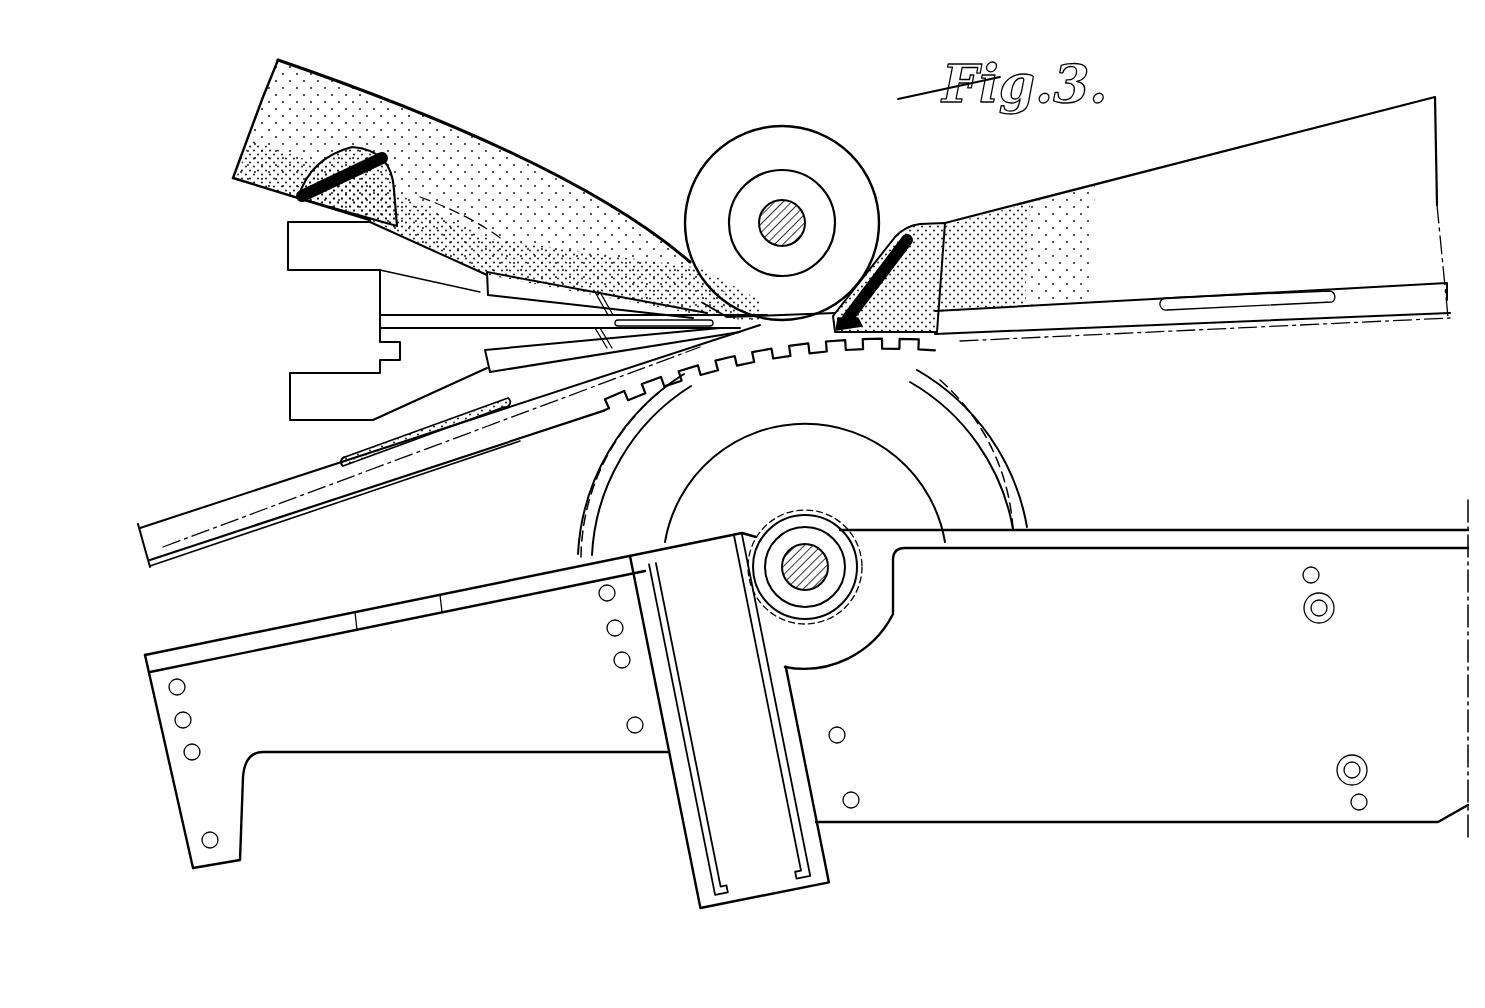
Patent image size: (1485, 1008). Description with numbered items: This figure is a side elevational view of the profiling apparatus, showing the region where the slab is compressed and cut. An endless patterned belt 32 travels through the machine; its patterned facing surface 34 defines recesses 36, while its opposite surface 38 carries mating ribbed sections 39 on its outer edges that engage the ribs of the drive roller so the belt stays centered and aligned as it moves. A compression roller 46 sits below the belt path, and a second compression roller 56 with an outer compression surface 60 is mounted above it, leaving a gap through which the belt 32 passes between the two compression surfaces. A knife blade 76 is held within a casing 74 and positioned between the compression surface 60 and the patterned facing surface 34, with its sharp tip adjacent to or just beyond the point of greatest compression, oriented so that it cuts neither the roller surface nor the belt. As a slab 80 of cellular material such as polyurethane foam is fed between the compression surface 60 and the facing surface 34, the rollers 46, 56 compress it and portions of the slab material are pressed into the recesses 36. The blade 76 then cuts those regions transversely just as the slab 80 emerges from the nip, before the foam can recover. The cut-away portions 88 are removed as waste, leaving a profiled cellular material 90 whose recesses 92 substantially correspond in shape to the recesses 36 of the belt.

The endless patterned belt 32 is at (1078, 313).
The patterned facing surface 34 is at (1267, 297).
The recesses 36 is at (368, 463).
The opposite surface 38 is at (507, 442).
The mating ribbed sections 39 is at (840, 352).
The compression roller 46 is at (893, 397).
The compression roller 56 is at (827, 157).
The outer compression surface 60 is at (838, 308).
The casing 74 is at (307, 393).
The knife blade 76 is at (703, 303).
The slab 80 is at (1082, 215).
The cut-away portions 88 is at (345, 458).
The profiled cellular material 90 is at (353, 100).
The recesses 92 is at (397, 190).